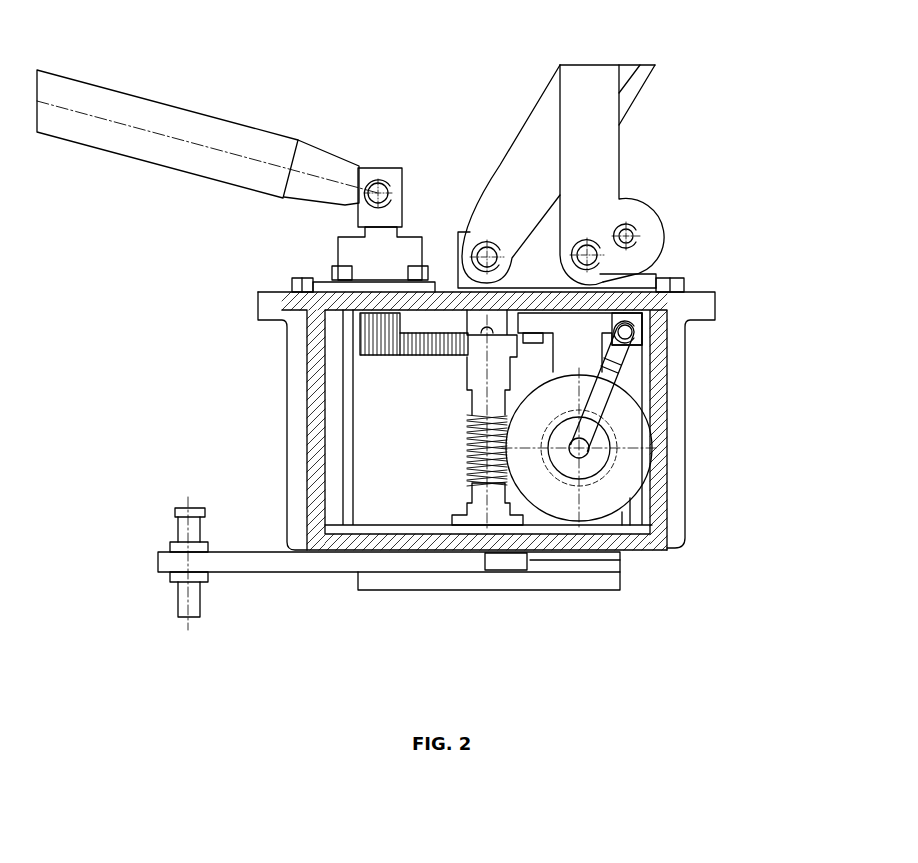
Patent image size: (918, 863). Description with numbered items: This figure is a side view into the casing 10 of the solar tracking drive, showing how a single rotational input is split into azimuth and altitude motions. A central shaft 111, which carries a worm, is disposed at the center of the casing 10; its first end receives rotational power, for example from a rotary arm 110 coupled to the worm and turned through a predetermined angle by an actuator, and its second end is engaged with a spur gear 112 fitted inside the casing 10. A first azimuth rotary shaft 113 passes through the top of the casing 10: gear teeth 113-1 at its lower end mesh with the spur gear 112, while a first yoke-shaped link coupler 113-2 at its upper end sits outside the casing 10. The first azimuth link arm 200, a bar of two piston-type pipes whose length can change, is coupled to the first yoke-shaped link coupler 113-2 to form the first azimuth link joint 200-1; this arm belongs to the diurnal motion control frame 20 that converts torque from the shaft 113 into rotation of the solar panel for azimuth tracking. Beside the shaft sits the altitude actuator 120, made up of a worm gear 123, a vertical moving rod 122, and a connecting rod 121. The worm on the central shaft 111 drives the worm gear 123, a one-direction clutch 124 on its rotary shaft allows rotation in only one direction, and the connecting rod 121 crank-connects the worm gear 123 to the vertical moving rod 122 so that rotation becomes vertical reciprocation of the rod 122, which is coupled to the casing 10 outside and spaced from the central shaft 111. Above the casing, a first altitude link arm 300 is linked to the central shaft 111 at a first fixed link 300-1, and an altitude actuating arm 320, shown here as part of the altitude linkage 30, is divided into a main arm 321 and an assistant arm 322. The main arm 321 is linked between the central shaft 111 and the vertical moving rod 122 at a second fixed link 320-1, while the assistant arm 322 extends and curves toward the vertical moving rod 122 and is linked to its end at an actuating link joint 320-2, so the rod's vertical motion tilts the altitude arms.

The casing 10 is at (265, 363).
The diurnal motion control frame 20 is at (141, 189).
The link unit 30 is at (668, 84).
The rotary arm 110 is at (333, 562).
The central shaft 111 is at (468, 398).
The spur gear 112 is at (392, 385).
The first azimuth rotary shaft 113 is at (357, 213).
The gear teeth 113-1 is at (353, 330).
The first yoke-shaped link coupler 113-2 is at (400, 185).
The altitude actuator 120 is at (760, 253).
The connecting rod 121 is at (620, 408).
The vertical moving rod 122 is at (660, 278).
The worm gear 123 is at (635, 437).
The one-direction clutch 124 is at (617, 475).
The first azimuth link arm 200 is at (118, 100).
The first azimuth link joint 200-1 is at (367, 166).
The first altitude link arm 300 is at (542, 118).
The first fixed link 300-1 is at (471, 247).
The altitude actuating arm 320 is at (709, 150).
The main arm 321 is at (603, 85).
The assistant arm 322 is at (663, 230).
The second fixed link 320-1 is at (620, 197).
The actuating link joint 320-2 is at (645, 222).